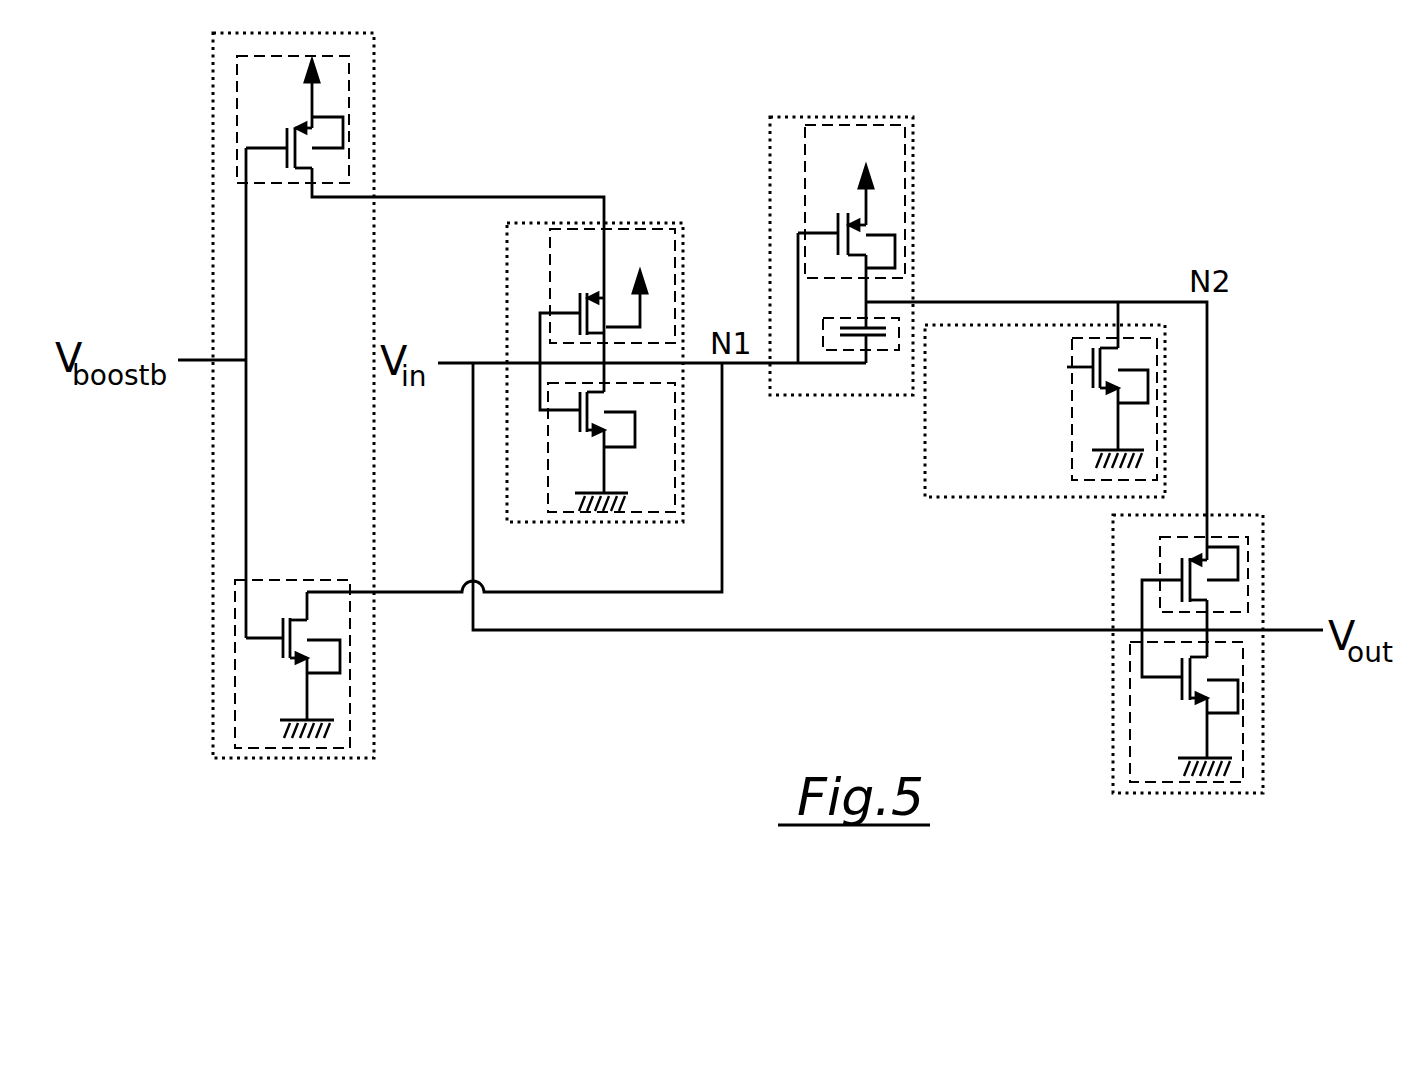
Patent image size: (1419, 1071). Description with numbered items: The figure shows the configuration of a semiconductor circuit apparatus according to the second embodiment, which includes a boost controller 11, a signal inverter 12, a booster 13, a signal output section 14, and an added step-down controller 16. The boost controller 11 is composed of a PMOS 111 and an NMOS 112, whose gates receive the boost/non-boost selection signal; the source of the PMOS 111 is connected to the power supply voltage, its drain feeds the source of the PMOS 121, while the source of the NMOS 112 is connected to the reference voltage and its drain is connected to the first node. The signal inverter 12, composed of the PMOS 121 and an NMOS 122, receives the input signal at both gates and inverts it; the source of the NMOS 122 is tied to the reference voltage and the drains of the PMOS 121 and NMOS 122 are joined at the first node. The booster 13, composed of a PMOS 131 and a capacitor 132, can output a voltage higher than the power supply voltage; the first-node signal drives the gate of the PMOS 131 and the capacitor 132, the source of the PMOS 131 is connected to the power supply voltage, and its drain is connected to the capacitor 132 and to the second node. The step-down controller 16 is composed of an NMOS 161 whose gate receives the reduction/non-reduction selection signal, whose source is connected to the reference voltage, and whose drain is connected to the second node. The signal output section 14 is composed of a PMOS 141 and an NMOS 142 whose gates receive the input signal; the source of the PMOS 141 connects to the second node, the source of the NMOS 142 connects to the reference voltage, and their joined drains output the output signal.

The boost controller 11 is at (376, 43).
The PMOS 111 is at (238, 100).
The NMOS 112 is at (236, 665).
The signal inverter 12 is at (620, 222).
The PMOS 121 is at (550, 247).
The NMOS 122 is at (630, 524).
The booster 13 is at (913, 150).
The PMOS 131 is at (862, 118).
The capacitor 132 is at (893, 352).
The step-down controller 16 is at (1005, 323).
The NMOS 161 is at (1071, 460).
The signal output section 14 is at (1218, 515).
The PMOS 141 is at (1160, 548).
The NMOS 142 is at (1130, 698).